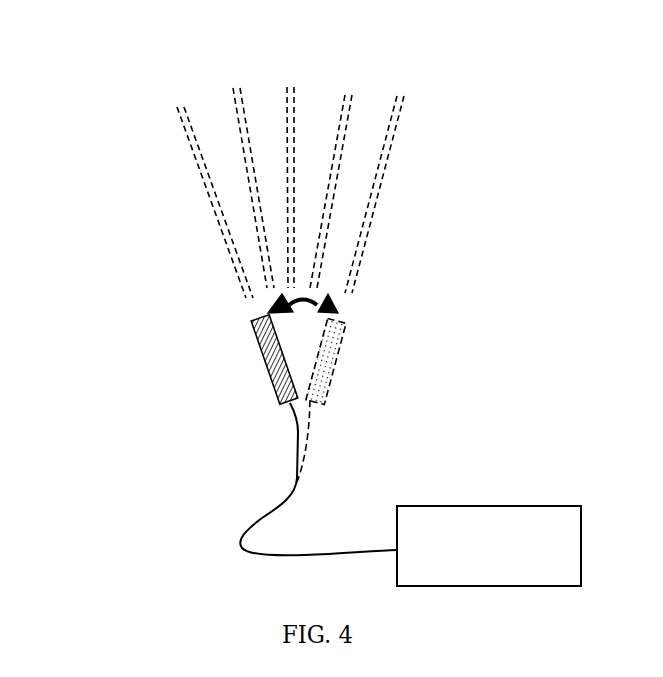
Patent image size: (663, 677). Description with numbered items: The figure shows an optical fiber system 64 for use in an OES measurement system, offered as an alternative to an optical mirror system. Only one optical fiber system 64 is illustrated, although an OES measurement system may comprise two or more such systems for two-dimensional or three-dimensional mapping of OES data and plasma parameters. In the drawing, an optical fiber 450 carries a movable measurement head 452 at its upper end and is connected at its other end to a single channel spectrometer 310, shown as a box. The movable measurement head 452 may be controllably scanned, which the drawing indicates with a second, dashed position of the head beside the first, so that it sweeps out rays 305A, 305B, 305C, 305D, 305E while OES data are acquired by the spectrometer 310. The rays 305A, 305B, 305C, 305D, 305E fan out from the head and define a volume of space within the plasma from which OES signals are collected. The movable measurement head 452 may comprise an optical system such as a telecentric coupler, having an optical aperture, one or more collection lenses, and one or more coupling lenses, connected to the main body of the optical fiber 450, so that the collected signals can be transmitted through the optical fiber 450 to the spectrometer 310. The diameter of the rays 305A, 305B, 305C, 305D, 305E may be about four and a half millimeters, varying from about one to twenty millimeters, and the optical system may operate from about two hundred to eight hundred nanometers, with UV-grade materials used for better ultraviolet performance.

The optical fiber system 64 is at (122, 243).
The ray 305A is at (188, 135).
The ray 305B is at (236, 108).
The ray 305C is at (286, 93).
The ray 305D is at (343, 100).
The ray 305E is at (403, 104).
The single channel spectrometer 310 is at (468, 558).
The optical fiber 450 is at (250, 525).
The movable measurement head 452 is at (267, 357).